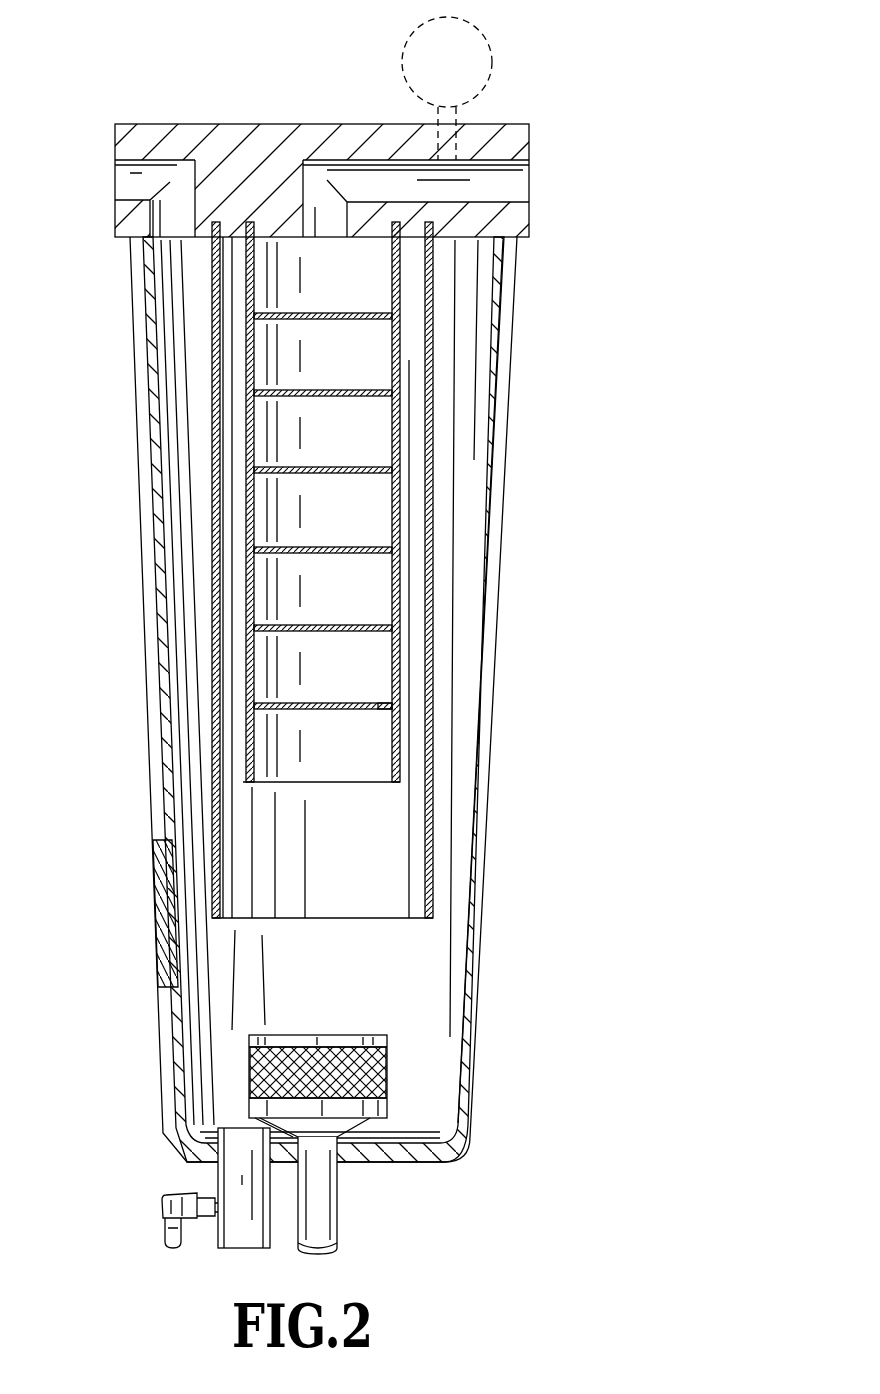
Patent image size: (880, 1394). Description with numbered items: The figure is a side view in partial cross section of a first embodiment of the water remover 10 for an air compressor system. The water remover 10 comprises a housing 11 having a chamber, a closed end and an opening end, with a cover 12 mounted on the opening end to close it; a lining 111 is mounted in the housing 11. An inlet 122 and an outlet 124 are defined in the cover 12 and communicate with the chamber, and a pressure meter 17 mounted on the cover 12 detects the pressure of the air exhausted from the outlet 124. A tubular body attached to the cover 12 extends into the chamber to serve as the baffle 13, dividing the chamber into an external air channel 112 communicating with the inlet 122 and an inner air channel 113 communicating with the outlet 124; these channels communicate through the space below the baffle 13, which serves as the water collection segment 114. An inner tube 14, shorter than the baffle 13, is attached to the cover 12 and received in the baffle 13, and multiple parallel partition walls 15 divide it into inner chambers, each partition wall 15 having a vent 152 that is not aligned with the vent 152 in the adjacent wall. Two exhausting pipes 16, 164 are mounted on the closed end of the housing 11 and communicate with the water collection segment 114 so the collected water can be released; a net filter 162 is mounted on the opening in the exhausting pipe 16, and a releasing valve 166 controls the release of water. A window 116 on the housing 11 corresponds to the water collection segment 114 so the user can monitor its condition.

The water remover 10 is at (488, 656).
The housing 11 is at (483, 748).
The lining 111 is at (463, 920).
The external air channel 112 is at (465, 402).
The inner air channel 113 is at (403, 858).
The water collection segment 114 is at (438, 982).
The window 116 is at (168, 858).
The cover 12 is at (497, 126).
The inlet 122 is at (130, 182).
The outlet 124 is at (517, 173).
The baffle 13 is at (428, 515).
The inner tube 14 is at (400, 338).
The partition wall 15 is at (313, 632).
The vent 152 is at (376, 709).
The exhausting pipe 16 is at (320, 1170).
The net filter 162 is at (377, 1077).
The exhausting pipe 164 is at (243, 1153).
The releasing valve 166 is at (188, 1207).
The pressure meter 17 is at (476, 76).